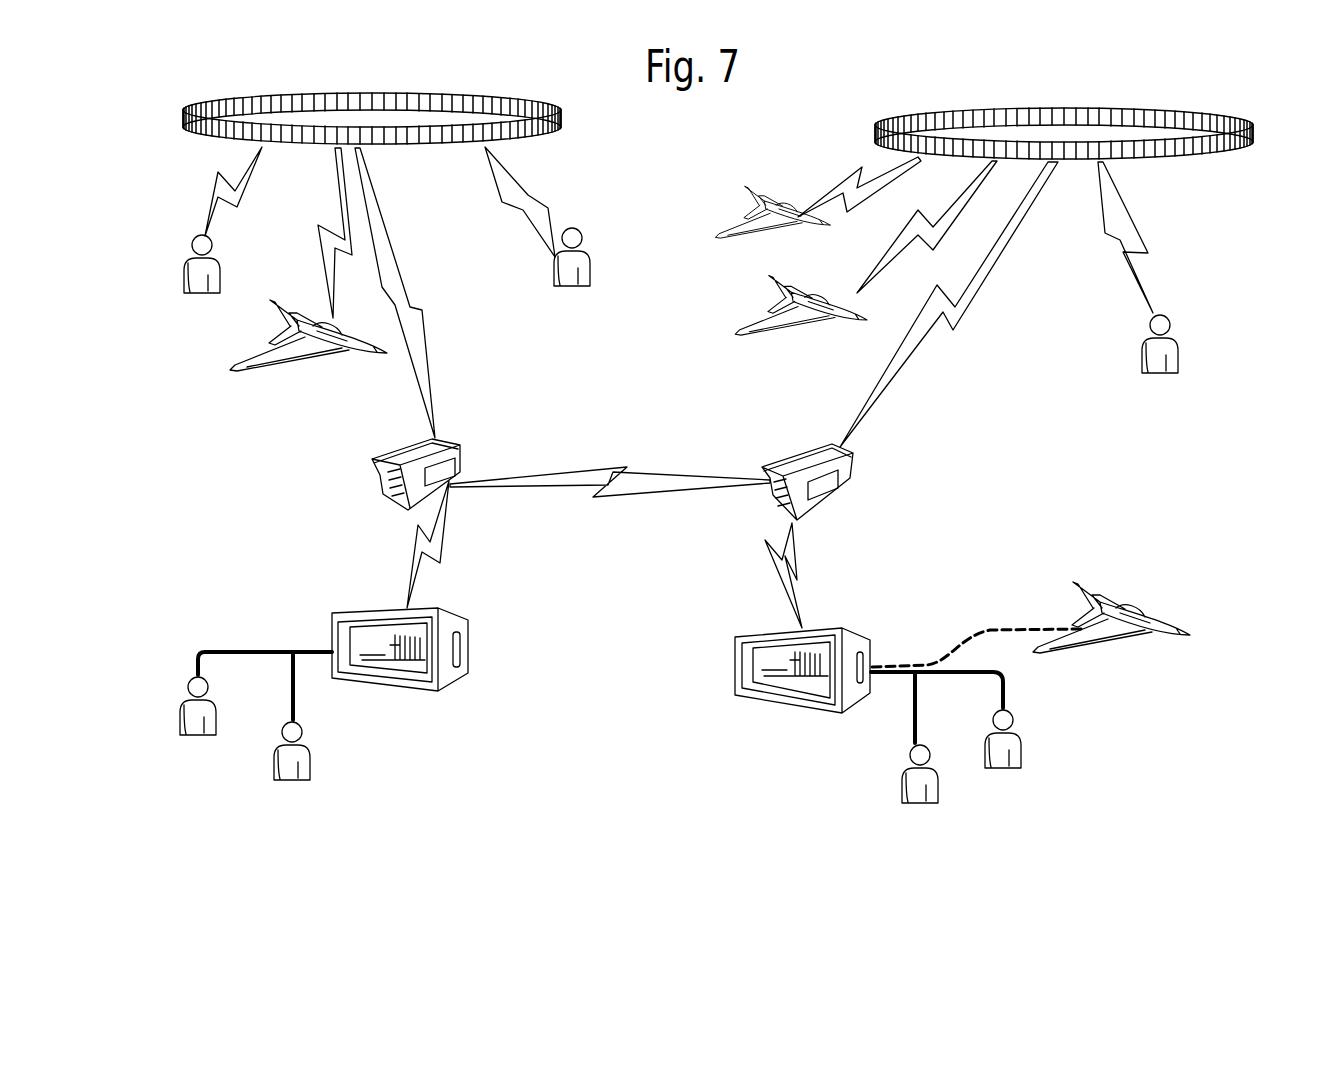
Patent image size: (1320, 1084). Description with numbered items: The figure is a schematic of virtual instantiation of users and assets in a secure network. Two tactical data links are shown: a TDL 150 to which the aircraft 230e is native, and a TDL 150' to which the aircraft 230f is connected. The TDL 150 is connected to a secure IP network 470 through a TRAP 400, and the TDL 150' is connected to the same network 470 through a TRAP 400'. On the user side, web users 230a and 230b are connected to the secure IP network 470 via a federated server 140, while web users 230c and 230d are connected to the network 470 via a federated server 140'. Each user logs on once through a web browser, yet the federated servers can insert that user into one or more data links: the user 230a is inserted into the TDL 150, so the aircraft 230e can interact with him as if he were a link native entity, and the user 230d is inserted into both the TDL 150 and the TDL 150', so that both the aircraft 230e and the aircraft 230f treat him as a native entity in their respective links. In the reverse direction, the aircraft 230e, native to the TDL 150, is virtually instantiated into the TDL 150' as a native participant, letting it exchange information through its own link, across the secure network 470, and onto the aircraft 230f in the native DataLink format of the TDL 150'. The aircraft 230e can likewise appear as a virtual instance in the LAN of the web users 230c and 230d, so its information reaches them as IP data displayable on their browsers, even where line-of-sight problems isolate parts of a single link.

The TDL 150 is at (367, 103).
The TDL 150' is at (1061, 115).
The web user 230a is at (190, 268).
The web user 230b is at (307, 760).
The web user 230c is at (907, 787).
The web user 230d is at (592, 258).
The aircraft 230e is at (310, 340).
The aircraft 230f is at (762, 197).
The TRAP 400 is at (372, 477).
The TRAP 400' is at (833, 487).
The federated server 140 is at (406, 661).
The federated server 140' is at (813, 671).
The secure IP network 470 is at (627, 590).